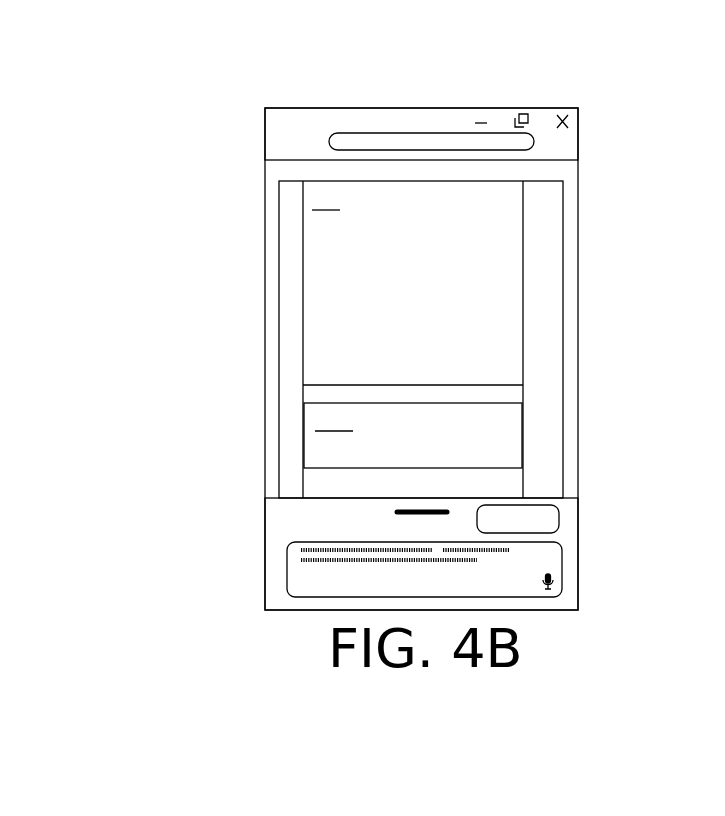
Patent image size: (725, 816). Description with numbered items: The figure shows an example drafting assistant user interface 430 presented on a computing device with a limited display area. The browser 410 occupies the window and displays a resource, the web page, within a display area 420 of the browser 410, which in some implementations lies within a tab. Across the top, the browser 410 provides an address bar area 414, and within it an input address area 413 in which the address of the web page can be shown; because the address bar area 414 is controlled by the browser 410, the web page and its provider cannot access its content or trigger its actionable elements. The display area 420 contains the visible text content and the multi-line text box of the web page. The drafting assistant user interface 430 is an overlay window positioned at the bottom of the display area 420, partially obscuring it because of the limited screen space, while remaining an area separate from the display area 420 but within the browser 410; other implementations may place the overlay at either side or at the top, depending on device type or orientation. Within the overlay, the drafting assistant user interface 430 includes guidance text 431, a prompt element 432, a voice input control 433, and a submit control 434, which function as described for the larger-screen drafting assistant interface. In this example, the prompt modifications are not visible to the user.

The browser 410 is at (390, 107).
The input address area 413 is at (417, 142).
The address bar area 414 is at (300, 138).
The display area 420 is at (291, 201).
The drafting assistant user interface 430 is at (588, 502).
The guidance text 431 is at (346, 546).
The prompt element 432 is at (439, 588).
The voice input control 433 is at (553, 596).
The submit control 434 is at (539, 519).